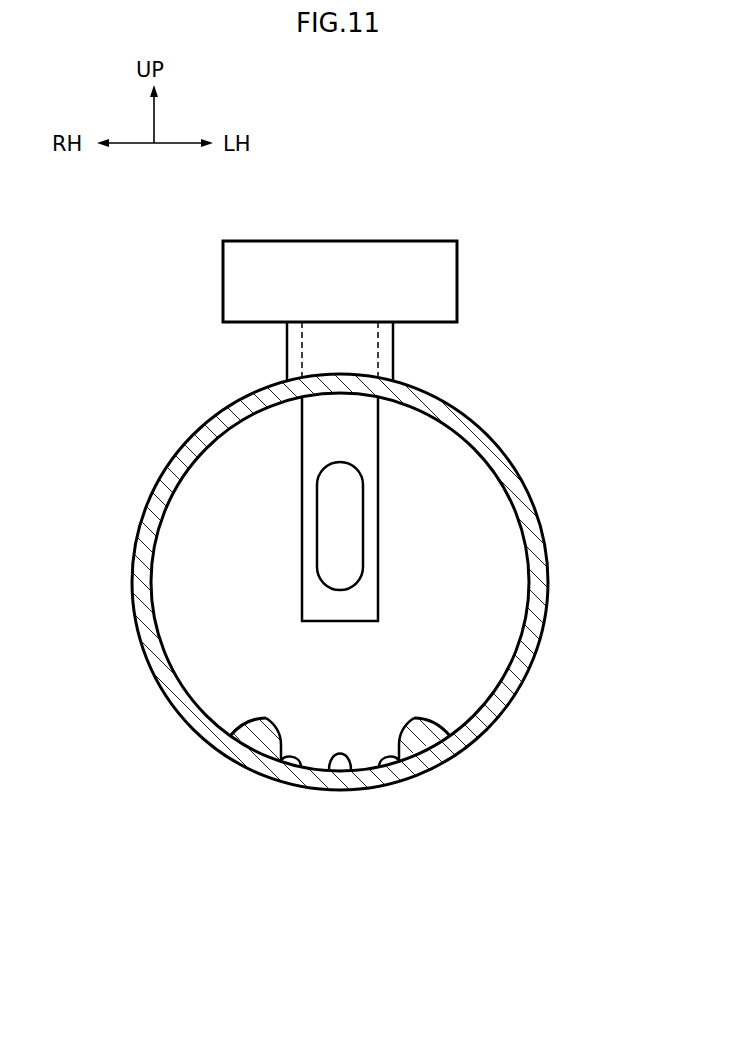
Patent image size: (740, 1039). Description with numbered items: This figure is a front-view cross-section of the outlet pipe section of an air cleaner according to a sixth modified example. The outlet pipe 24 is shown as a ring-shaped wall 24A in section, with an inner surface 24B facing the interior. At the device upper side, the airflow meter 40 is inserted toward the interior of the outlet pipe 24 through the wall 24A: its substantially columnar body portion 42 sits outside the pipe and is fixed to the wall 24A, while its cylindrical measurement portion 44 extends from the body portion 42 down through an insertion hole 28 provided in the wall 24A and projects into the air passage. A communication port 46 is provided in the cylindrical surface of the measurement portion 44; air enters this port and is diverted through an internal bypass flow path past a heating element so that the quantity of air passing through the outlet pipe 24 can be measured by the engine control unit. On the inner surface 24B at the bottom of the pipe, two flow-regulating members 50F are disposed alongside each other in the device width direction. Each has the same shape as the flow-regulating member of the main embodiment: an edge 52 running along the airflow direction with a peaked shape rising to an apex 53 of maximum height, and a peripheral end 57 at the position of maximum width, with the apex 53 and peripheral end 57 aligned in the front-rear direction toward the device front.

The airflow meter 40 is at (334, 234).
The body portion 42 is at (410, 250).
The insertion hole 28 is at (378, 348).
The measurement portion 44 is at (457, 497).
The communication port 46 is at (352, 548).
The outlet pipe 24 is at (395, 704).
The wall 24A is at (503, 464).
The inner surface 24B is at (345, 768).
The apex 53 is at (336, 712).
The edge 52 is at (336, 712).
The flow-regulating members 50F is at (340, 712).
The peripheral end 57 is at (289, 779).